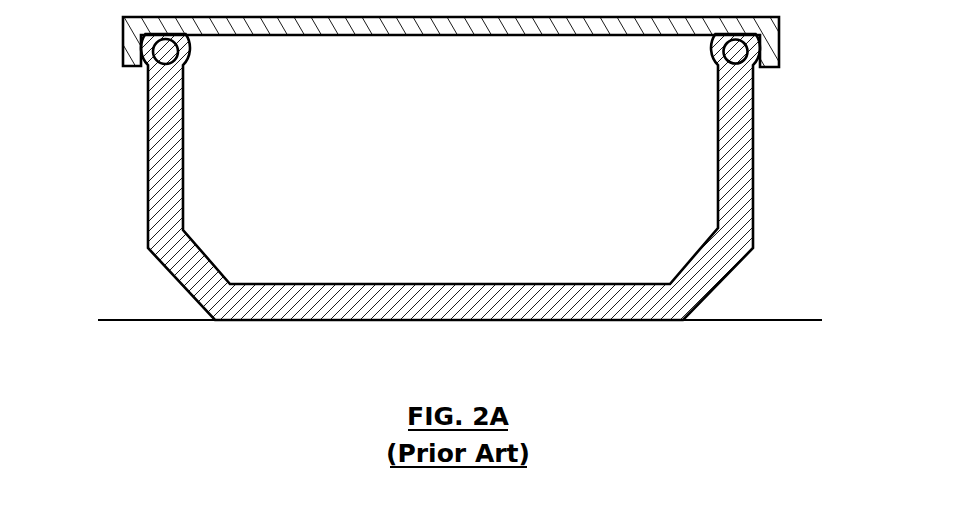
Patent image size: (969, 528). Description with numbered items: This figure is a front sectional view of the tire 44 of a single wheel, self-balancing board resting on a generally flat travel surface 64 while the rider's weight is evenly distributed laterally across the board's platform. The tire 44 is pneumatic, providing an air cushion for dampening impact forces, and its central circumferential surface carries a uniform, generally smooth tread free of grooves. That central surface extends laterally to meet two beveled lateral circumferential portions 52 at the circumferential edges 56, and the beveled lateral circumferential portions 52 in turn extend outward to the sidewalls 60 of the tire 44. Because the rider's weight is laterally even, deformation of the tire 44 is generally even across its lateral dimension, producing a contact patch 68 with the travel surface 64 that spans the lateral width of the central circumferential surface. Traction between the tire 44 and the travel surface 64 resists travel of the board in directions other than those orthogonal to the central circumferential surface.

The tire 44 is at (130, 156).
The sidewalls 60 is at (753, 158).
The beveled lateral circumferential portions 52 is at (738, 263).
The circumferential edges 56 is at (690, 326).
The contact patch 68 is at (361, 326).
The travel surface 64 is at (148, 313).